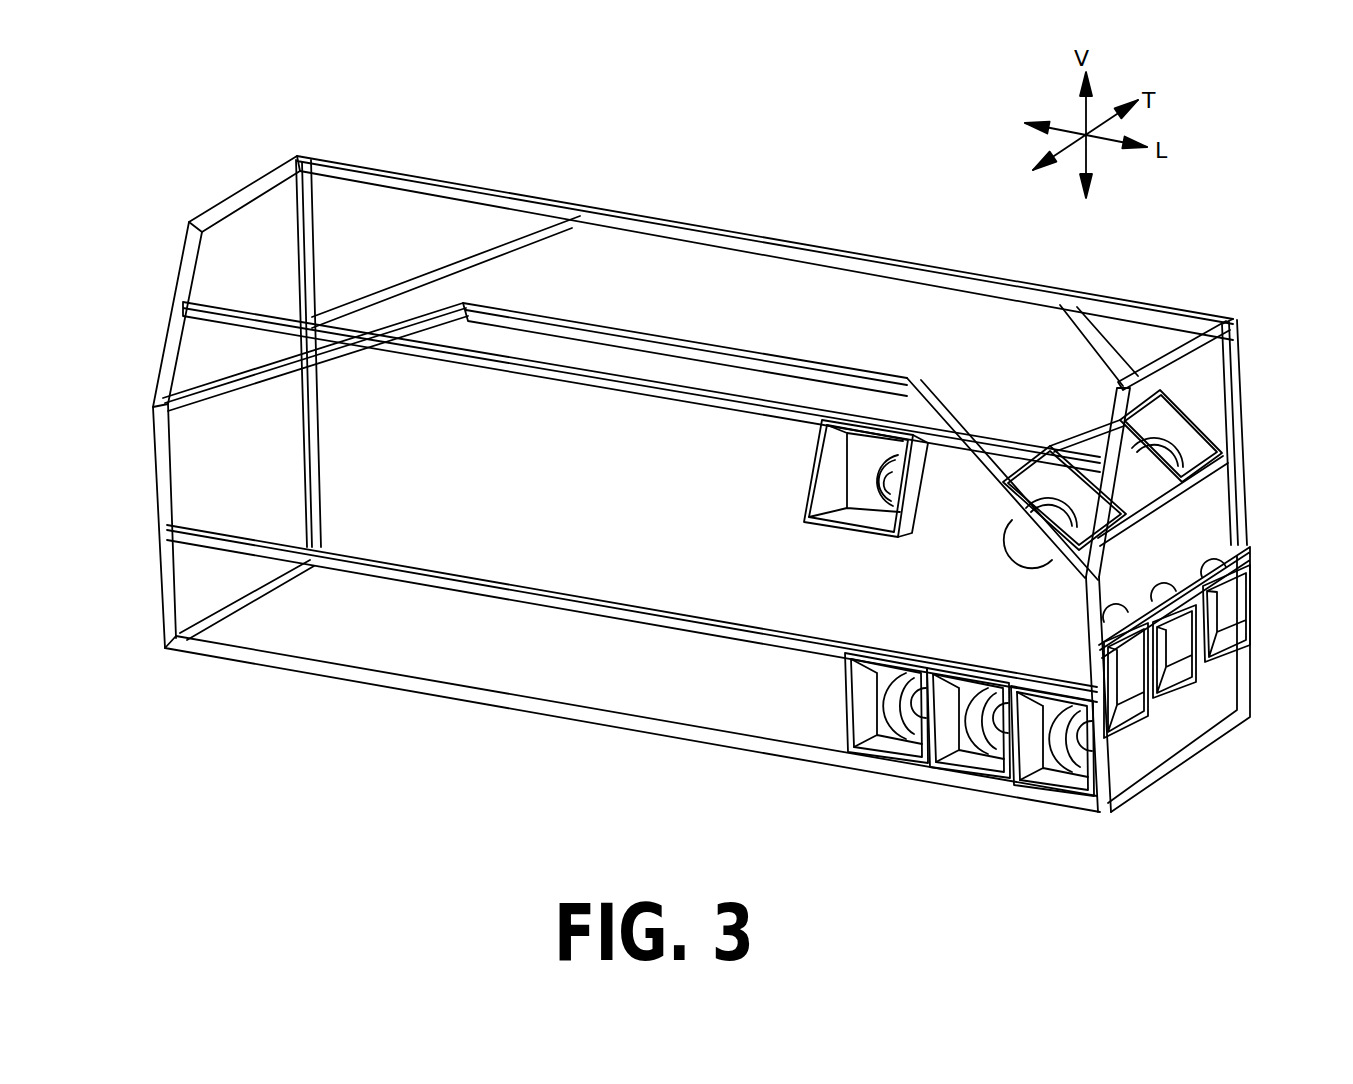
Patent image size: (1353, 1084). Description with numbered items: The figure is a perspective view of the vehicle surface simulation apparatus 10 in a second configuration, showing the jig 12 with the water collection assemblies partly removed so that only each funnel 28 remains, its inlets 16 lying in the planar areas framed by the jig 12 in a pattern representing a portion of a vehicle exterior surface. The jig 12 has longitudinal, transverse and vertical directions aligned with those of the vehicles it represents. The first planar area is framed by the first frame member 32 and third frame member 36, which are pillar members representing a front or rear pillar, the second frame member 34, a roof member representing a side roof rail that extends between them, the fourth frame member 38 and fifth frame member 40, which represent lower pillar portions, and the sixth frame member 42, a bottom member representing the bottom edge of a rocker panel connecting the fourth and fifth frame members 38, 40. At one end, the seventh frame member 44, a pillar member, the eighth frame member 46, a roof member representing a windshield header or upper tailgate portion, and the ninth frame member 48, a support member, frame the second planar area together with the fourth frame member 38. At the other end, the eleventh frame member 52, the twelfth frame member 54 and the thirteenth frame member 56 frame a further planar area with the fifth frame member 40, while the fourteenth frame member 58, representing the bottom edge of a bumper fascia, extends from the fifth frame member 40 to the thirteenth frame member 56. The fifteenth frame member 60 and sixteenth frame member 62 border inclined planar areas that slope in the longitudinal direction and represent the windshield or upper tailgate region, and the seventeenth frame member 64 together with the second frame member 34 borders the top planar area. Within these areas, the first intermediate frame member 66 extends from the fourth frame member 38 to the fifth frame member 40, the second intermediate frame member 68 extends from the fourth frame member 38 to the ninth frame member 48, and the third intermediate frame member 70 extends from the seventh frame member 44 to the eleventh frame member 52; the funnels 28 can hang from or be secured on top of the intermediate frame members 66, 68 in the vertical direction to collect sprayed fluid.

The vehicle surface simulation apparatus 10 is at (857, 207).
The jig 12 is at (704, 217).
The inlets 16 is at (818, 464).
The funnel 28 is at (1014, 446).
The first frame member 32 is at (940, 398).
The second frame member 34 is at (764, 348).
The third frame member 36 is at (342, 368).
The fourth frame member 38 is at (1084, 600).
The fifth frame member 40 is at (162, 472).
The sixth frame member 42 is at (466, 710).
The seventh frame member 44 is at (1108, 410).
The eighth frame member 46 is at (1170, 338).
The ninth frame member 48 is at (1244, 344).
The eleventh frame member 52 is at (168, 330).
The twelfth frame member 54 is at (248, 190).
The thirteenth frame member 56 is at (318, 232).
The fourteenth frame member 58 is at (260, 600).
The fifteenth frame member 60 is at (1070, 330).
The sixteenth frame member 62 is at (528, 250).
The seventeenth frame member 64 is at (945, 262).
The first intermediate frame member 66 is at (552, 622).
The second intermediate frame member 68 is at (1147, 590).
The third intermediate frame member 70 is at (585, 390).